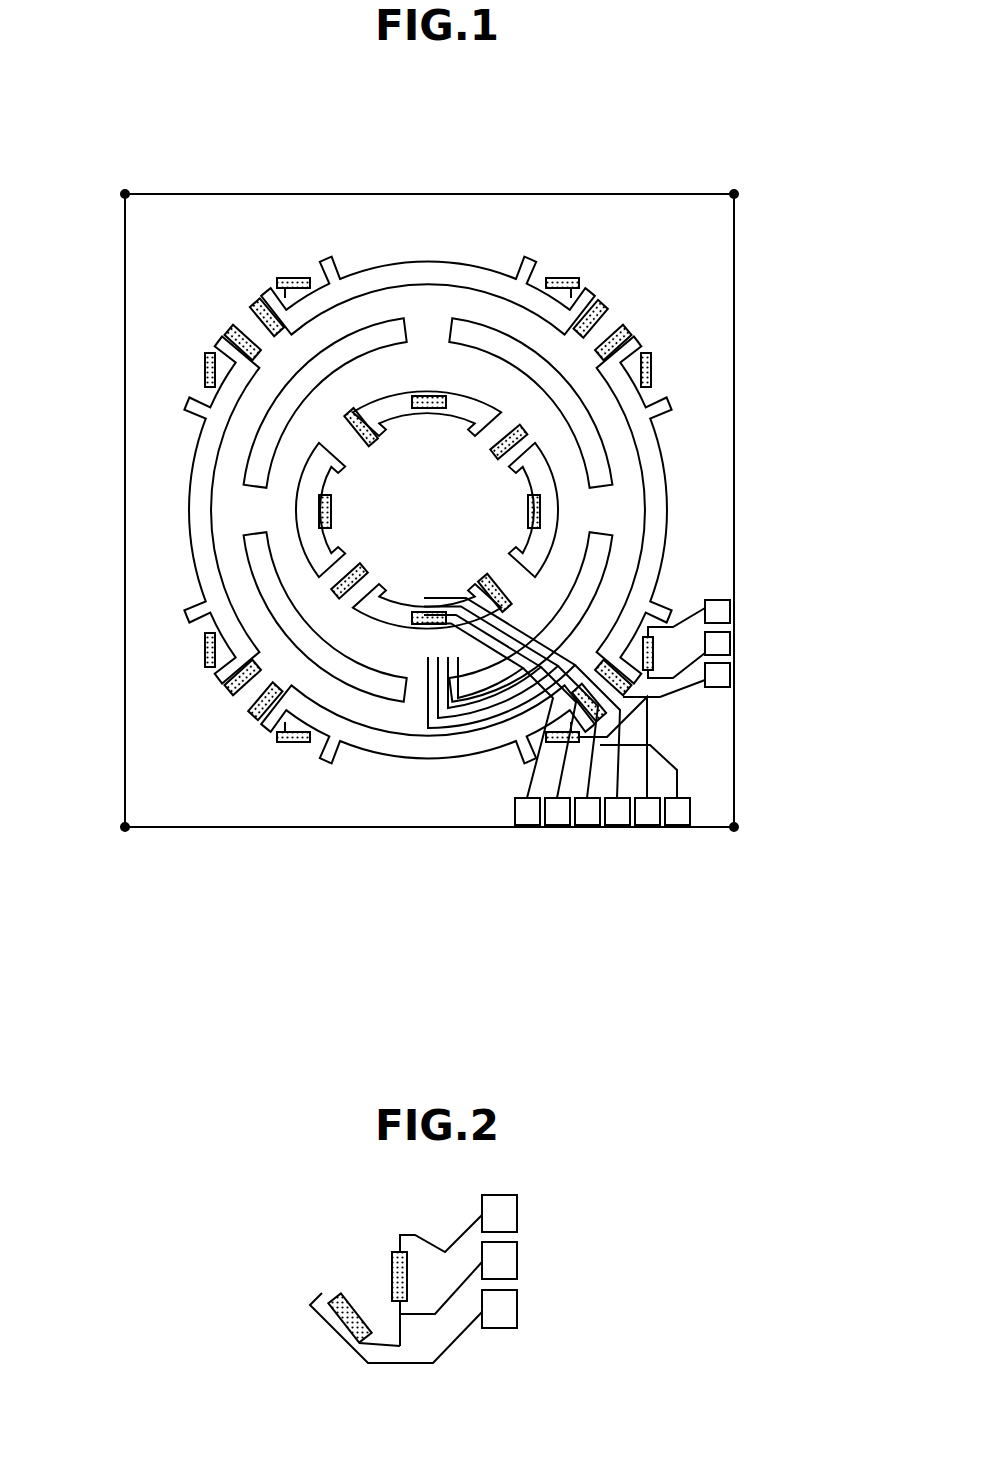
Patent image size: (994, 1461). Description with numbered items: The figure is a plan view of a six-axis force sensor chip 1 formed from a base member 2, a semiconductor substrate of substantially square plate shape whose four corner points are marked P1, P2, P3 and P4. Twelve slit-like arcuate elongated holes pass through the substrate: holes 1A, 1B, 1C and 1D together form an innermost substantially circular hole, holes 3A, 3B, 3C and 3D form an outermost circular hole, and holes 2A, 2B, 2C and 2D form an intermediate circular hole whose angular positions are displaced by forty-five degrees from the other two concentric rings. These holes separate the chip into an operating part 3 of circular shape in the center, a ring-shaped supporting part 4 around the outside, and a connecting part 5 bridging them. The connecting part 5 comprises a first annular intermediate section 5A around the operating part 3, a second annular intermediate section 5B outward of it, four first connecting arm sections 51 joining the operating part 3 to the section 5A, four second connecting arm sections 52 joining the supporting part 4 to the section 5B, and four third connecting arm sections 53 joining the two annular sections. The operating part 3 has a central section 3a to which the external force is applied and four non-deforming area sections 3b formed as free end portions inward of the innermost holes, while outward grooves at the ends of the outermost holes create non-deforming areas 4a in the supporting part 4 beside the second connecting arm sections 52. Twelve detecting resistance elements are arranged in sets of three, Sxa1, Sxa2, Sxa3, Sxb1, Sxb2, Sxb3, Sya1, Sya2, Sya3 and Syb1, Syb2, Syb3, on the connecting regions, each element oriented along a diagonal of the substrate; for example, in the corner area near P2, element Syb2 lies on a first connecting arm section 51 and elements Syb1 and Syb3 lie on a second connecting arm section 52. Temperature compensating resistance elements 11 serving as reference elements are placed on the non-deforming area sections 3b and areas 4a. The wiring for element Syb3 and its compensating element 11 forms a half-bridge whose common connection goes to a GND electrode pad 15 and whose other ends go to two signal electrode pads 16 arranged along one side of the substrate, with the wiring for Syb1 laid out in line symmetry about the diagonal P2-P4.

In FIG. 1, the force sensor chip 1 is at (742, 228).
In FIG. 1, the base member 2 is at (712, 250).
In FIG. 1, the operating part 3 is at (556, 556).
In FIG. 1, the central section 3a is at (443, 524).
In FIG. 1, the non-deforming area section 3b is at (408, 405).
In FIG. 1, the supporting part 4 is at (722, 292).
In FIG. 1, the non-deforming area 4a is at (283, 279).
In FIG. 1, the connecting part 5 is at (526, 332).
In FIG. 1, the first annular intermediate section 5A is at (600, 425).
In FIG. 1, the second annular intermediate section 5B is at (590, 490).
In FIG. 1, the temperature compensating resistance element 11 is at (302, 278).
In FIG. 2, the temperature compensating resistance element 11 is at (392, 1258).
In FIG. 1, the GND electrode pad 15 is at (730, 645).
In FIG. 2, the GND electrode pad 15 is at (517, 1260).
In FIG. 1, the signal electrode pad 16 is at (730, 612).
In FIG. 2, the signal electrode pad 16 is at (517, 1212).
In FIG. 1, the first connecting arm section 51 is at (349, 283).
In FIG. 1, the second connecting arm section 52 is at (242, 352).
In FIG. 1, the third connecting arm section 53 is at (430, 345).
In FIG. 1, the arcuate elongated hole 1A is at (382, 383).
In FIG. 1, the arcuate elongated hole 1B is at (640, 440).
In FIG. 1, the arcuate elongated hole 1C is at (404, 762).
In FIG. 1, the arcuate elongated hole 1D is at (215, 527).
In FIG. 1, the arcuate elongated hole 2A is at (464, 330).
In FIG. 1, the arcuate elongated hole 2B is at (590, 565).
In FIG. 1, the arcuate elongated hole 2C is at (378, 690).
In FIG. 1, the arcuate elongated hole 2D is at (252, 468).
In FIG. 1, the arcuate elongated hole 3A is at (352, 395).
In FIG. 1, the arcuate elongated hole 3B is at (550, 468).
In FIG. 1, the arcuate elongated hole 3C is at (440, 700).
In FIG. 1, the arcuate elongated hole 3D is at (303, 578).
In FIG. 1, the corner point P1 is at (750, 182).
In FIG. 1, the corner point P2 is at (750, 844).
In FIG. 1, the corner point P3 is at (108, 844).
In FIG. 1, the corner point P4 is at (107, 182).
In FIG. 1, the resistance element Sya1 is at (258, 300).
In FIG. 1, the resistance element Sya2 is at (377, 443).
In FIG. 1, the resistance element Sya3 is at (237, 333).
In FIG. 1, the resistance element Sxa1 is at (625, 330).
In FIG. 1, the resistance element Sxa2 is at (504, 452).
In FIG. 1, the resistance element Sxa3 is at (592, 306).
In FIG. 1, the resistance element Sxb1 is at (250, 700).
In FIG. 1, the resistance element Sxb2 is at (350, 572).
In FIG. 1, the resistance element Sxb3 is at (270, 724).
In FIG. 1, the resistance element Syb1 is at (572, 695).
In FIG. 1, the resistance element Syb2 is at (487, 581).
In FIG. 1, the resistance element Syb3 is at (600, 666).
In FIG. 2, the resistance element Syb3 is at (336, 1296).